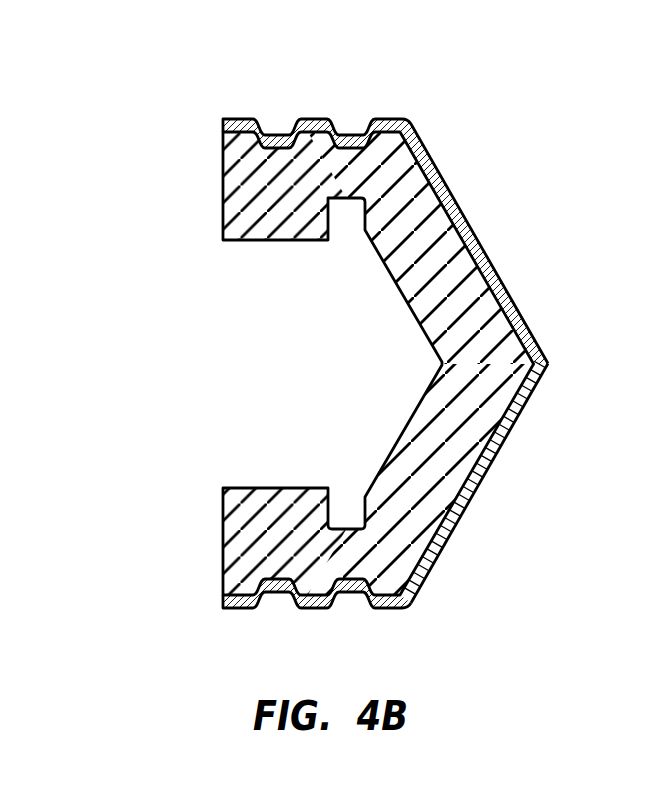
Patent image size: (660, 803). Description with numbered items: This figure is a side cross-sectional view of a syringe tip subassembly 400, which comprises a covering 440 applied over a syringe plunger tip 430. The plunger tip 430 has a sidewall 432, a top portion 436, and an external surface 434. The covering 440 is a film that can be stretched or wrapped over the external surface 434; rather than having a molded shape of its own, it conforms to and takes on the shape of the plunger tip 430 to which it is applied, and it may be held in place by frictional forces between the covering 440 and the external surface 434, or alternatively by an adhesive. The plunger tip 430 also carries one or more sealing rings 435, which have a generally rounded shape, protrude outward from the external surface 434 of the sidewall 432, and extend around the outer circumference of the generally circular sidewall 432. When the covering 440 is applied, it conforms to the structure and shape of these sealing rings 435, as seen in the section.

The syringe tip subassembly 400 is at (533, 192).
The syringe plunger tip 430 is at (236, 515).
The sidewall 432 is at (362, 175).
The external surface 434 is at (502, 281).
The sealing rings 435 is at (320, 588).
The top portion 436 is at (473, 413).
The covering 440 is at (457, 522).